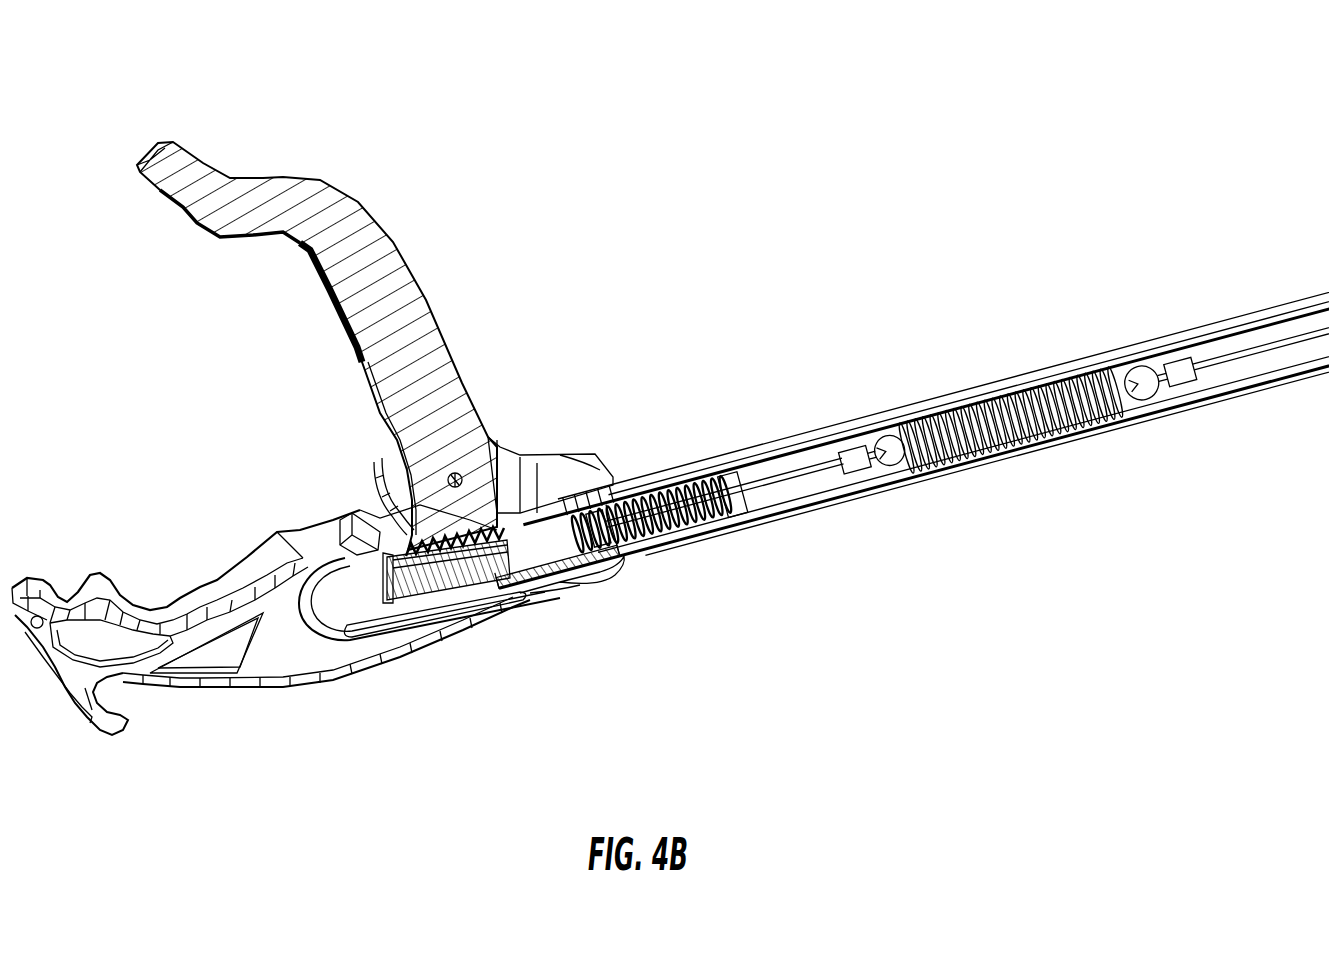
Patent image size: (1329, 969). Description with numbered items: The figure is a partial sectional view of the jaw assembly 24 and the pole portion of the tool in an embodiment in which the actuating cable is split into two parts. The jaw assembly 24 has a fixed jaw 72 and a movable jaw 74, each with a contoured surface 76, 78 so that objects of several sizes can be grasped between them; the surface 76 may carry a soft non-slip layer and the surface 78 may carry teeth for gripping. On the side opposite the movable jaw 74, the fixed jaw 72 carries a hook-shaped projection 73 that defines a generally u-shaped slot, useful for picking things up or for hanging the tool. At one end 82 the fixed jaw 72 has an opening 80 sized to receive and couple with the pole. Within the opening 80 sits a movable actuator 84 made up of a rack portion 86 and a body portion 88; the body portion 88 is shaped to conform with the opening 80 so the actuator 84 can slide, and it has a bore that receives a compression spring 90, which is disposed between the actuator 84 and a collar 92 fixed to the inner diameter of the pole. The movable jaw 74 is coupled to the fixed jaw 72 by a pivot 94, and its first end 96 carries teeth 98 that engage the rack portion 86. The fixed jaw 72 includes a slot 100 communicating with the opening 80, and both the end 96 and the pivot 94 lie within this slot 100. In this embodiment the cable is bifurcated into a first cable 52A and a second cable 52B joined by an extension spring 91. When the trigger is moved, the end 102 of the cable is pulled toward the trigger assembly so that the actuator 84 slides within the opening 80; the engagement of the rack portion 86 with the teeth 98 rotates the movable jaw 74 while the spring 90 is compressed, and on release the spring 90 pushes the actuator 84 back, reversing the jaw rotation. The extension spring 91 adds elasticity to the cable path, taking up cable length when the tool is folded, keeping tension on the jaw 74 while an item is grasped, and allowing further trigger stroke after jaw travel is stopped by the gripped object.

The jaw assembly 24 is at (486, 74).
The first cable 52A is at (1242, 352).
The second cable 52B is at (777, 480).
The fixed jaw 72 is at (285, 683).
The projection 73 is at (97, 728).
The movable jaw 74 is at (280, 178).
The contoured surface 76 is at (190, 607).
The contoured surface 78 is at (312, 258).
The opening 80 is at (367, 600).
The end 82 is at (608, 578).
The movable actuator 84 is at (508, 605).
The rack portion 86 is at (458, 612).
The body portion 88 is at (569, 602).
The compression spring 90 is at (665, 488).
The extension spring 91 is at (1000, 392).
The collar 92 is at (715, 500).
The pivot 94 is at (440, 536).
The first end 96 is at (440, 532).
The teeth 98 is at (408, 535).
The slot 100 is at (508, 480).
The end of cable 102 is at (601, 522).